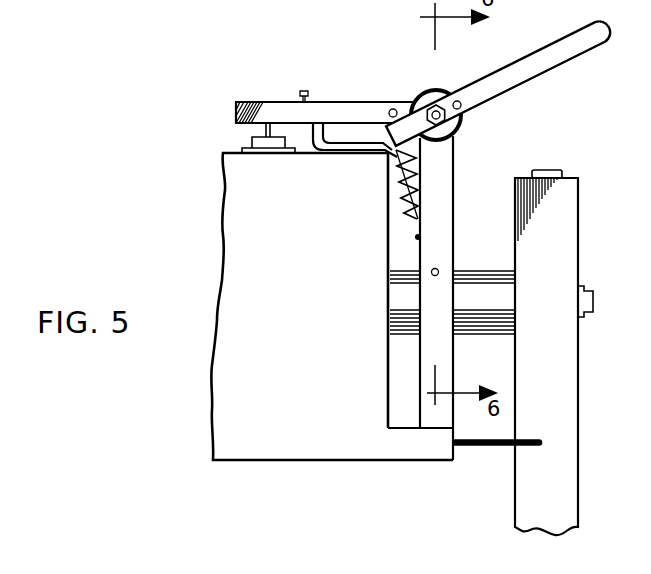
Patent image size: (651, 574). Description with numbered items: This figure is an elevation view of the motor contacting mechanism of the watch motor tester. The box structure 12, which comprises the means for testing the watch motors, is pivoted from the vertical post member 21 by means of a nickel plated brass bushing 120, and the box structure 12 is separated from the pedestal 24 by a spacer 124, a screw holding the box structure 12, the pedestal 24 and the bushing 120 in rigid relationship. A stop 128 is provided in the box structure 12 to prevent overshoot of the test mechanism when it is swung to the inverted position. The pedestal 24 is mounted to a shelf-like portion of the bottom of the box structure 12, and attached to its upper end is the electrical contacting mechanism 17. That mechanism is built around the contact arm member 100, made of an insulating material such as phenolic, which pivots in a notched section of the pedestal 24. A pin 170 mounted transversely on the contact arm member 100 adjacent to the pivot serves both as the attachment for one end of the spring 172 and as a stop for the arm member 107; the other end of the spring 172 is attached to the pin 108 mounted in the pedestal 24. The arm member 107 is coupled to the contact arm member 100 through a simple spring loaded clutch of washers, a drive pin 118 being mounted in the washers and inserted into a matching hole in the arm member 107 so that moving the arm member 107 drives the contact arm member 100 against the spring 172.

The box structure 12 is at (232, 392).
The electrical contacting mechanism 17 is at (236, 94).
The vertical post member 21 is at (580, 248).
The pedestal 24 is at (455, 178).
The contact arm member 100 is at (286, 100).
The arm member 107 is at (563, 34).
The pin 108 is at (437, 268).
The drive pin 118 is at (462, 104).
The bushing 120 is at (497, 338).
The spacer 124 is at (403, 340).
The stop 128 is at (499, 447).
The pin 170 is at (394, 108).
The spring 172 is at (412, 213).